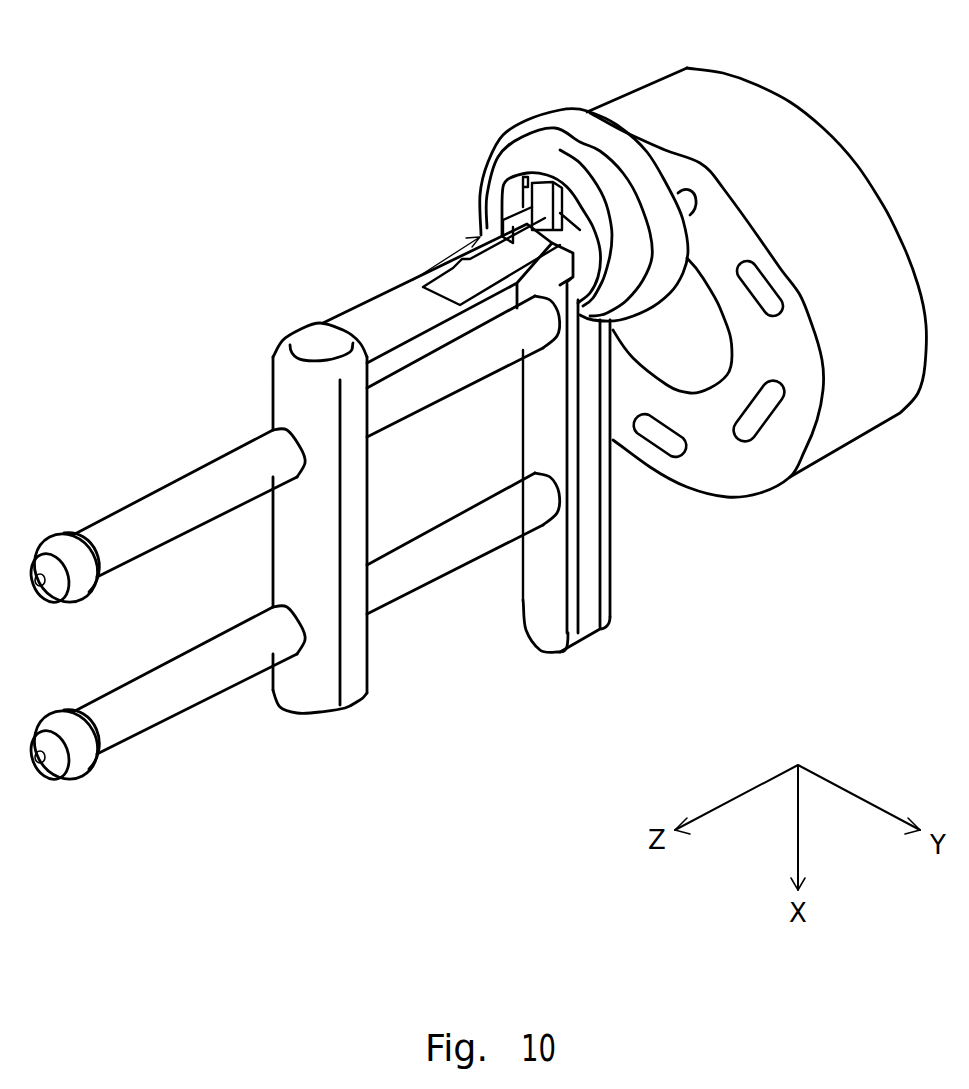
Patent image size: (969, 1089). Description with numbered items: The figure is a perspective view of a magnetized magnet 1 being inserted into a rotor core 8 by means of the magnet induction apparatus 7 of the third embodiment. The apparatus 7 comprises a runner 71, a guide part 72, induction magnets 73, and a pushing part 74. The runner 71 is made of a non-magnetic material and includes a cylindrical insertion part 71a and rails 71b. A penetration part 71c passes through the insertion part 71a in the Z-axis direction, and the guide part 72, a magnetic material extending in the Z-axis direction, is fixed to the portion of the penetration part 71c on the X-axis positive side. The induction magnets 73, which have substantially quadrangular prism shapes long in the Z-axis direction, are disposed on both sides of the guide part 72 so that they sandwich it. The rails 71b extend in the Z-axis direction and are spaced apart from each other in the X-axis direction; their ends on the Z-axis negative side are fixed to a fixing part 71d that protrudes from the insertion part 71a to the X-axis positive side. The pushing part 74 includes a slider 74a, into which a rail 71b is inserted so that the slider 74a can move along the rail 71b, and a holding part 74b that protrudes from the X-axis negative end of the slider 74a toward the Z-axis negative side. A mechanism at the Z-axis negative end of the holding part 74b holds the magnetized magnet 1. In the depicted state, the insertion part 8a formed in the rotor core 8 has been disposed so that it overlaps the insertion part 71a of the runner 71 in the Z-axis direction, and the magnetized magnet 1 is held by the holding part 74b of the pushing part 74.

The magnetized magnet 1 is at (447, 283).
The magnet induction apparatus 7 is at (291, 498).
The rotor core 8 is at (817, 97).
The insertion part 8a is at (663, 450).
The runner 71 is at (551, 359).
The insertion part 71a is at (580, 91).
The rails 71b is at (428, 562).
The penetration part 71c is at (523, 178).
The fixing part 71d is at (551, 648).
The guide part 72 is at (540, 187).
The induction magnets 73 is at (500, 230).
The pushing part 74 is at (367, 451).
The slider 74a is at (292, 405).
The holding part 74b is at (441, 276).